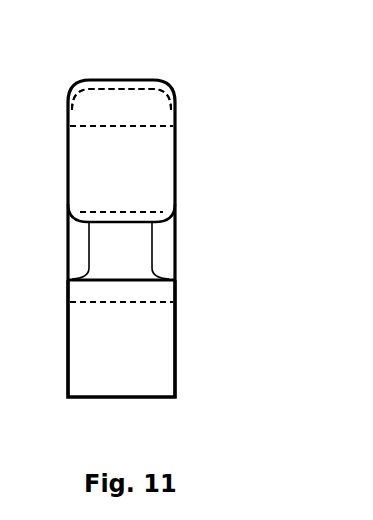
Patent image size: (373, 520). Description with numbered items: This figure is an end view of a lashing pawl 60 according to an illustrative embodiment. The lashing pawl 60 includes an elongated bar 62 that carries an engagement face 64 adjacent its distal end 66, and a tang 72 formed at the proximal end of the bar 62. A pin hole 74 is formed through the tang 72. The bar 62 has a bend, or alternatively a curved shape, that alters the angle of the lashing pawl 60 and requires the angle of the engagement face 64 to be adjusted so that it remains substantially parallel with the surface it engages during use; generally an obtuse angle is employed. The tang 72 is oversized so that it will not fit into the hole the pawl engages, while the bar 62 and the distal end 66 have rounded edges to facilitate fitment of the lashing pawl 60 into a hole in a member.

The lashing pawl 60 is at (184, 28).
The elongated bar 62 is at (68, 255).
The engagement face 64 is at (81, 133).
The distal end 66 is at (85, 98).
The tang 72 is at (78, 400).
The pin hole 74 is at (81, 302).